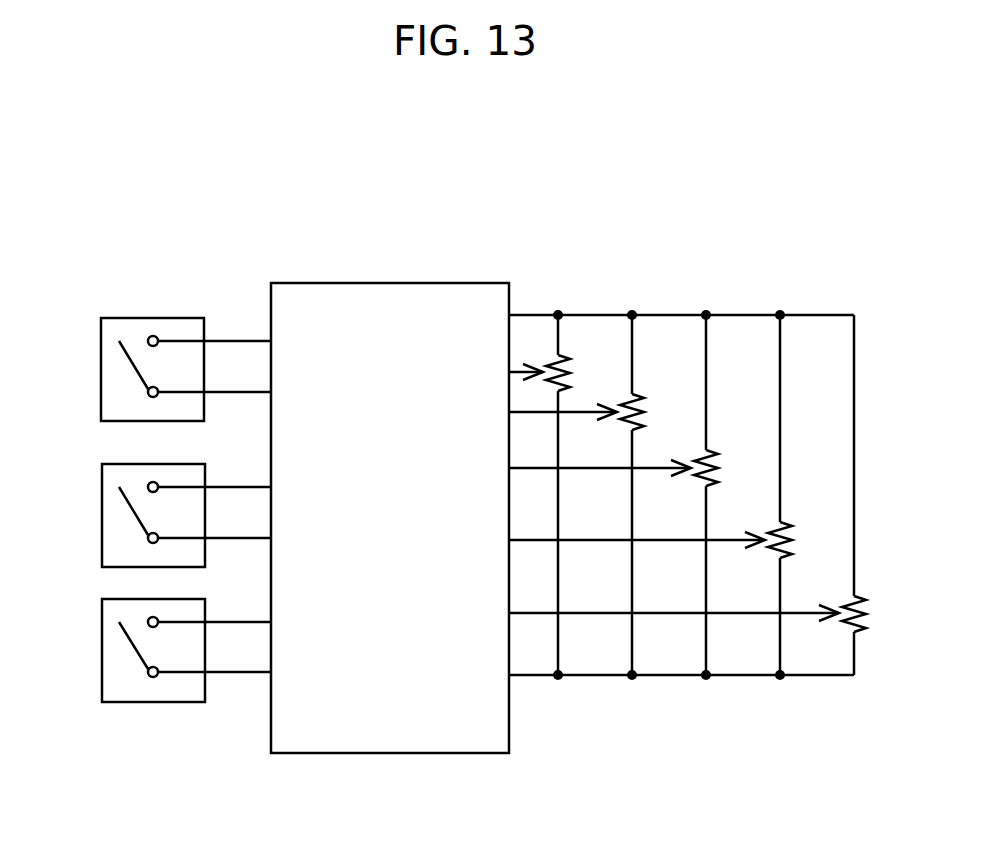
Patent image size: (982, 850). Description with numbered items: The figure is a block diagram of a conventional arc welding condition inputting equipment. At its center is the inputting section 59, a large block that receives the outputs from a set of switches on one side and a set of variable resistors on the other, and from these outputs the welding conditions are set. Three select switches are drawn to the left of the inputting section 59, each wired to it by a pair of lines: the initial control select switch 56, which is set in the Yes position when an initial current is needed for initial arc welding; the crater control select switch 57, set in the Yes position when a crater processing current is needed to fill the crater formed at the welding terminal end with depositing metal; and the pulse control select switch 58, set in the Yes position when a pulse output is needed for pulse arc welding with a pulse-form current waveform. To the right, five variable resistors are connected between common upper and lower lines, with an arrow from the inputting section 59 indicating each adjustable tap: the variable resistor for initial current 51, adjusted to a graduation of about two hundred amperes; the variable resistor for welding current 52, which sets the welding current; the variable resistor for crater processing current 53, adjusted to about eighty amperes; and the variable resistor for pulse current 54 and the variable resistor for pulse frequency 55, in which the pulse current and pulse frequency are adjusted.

The variable resistor for initial current 51 is at (563, 367).
The variable resistor for welding current 52 is at (637, 407).
The variable resistor for crater processing current 53 is at (711, 460).
The variable resistor for pulse current 54 is at (786, 533).
The variable resistor for pulse frequency 55 is at (862, 608).
The initial control select switch 56 is at (101, 650).
The crater control select switch 57 is at (101, 505).
The pulse control select switch 58 is at (100, 352).
The inputting section 59 is at (320, 282).